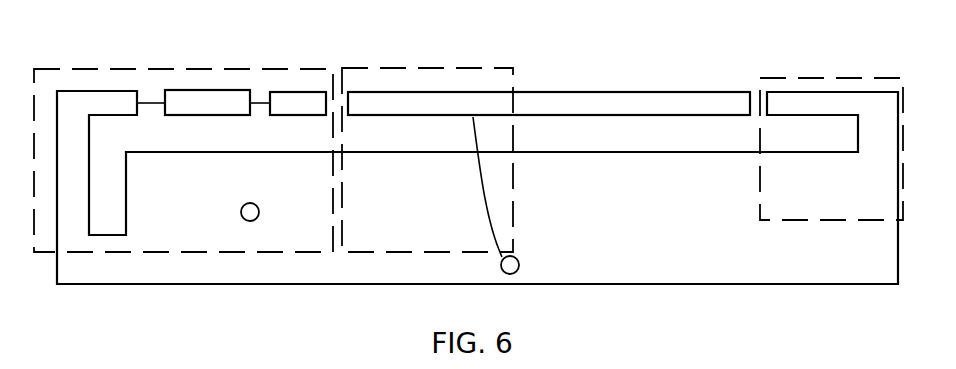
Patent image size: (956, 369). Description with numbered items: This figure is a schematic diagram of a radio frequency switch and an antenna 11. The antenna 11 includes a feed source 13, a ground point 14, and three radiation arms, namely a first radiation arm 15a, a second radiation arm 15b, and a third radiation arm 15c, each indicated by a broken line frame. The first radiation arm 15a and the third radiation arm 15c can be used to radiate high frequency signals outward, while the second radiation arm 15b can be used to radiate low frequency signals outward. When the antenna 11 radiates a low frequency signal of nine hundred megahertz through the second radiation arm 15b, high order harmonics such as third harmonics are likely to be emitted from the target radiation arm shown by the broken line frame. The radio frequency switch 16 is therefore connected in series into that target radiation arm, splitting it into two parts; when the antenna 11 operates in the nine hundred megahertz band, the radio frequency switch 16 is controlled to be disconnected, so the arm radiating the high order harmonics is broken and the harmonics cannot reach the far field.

The antenna 11 is at (610, 91).
The feed source 13 is at (518, 258).
The ground point 14 is at (259, 213).
The first radiation arm 15a is at (103, 91).
The second radiation arm 15b is at (448, 91).
The third radiation arm 15c is at (783, 90).
The radio frequency switch 16 is at (233, 90).